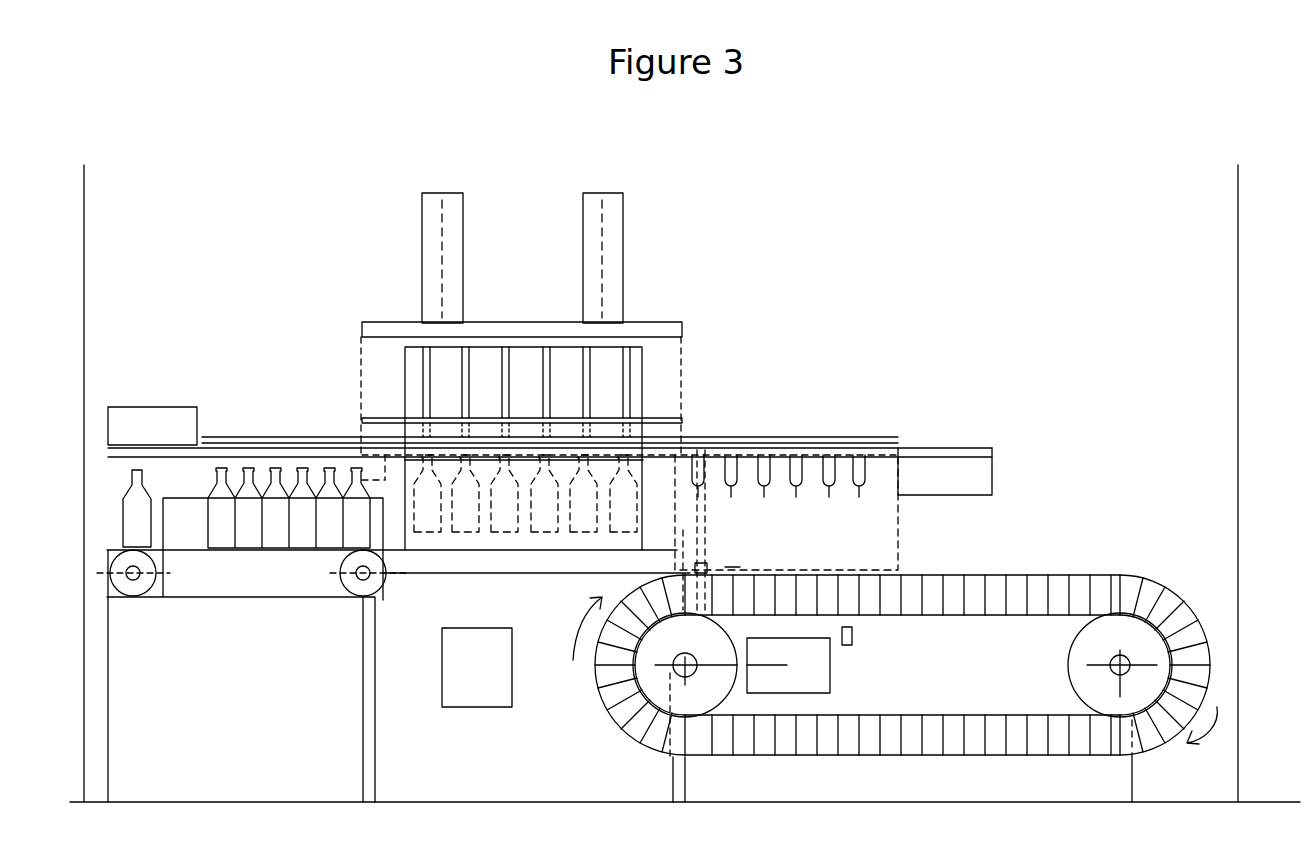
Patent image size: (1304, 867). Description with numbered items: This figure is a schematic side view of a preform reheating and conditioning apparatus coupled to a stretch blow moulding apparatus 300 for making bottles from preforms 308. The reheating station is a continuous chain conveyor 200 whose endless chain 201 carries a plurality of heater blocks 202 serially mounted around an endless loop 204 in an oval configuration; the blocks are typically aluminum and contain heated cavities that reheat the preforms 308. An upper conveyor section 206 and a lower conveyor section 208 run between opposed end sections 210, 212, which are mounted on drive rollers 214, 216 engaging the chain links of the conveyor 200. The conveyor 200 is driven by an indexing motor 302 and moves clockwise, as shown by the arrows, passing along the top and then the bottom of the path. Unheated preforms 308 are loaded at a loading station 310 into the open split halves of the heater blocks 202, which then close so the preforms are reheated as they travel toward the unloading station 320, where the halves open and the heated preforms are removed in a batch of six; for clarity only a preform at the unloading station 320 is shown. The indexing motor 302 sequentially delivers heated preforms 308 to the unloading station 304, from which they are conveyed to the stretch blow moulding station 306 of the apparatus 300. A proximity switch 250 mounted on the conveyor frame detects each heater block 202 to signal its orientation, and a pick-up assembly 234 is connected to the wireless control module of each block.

The continuous chain conveyor 200 is at (1097, 566).
The endless chain 201 is at (927, 608).
The heater block 202 is at (1040, 747).
The endless loop 204 is at (1018, 620).
The upper conveyor section 206 is at (952, 593).
The lower conveyor section 208 is at (925, 750).
The end section 210 is at (593, 683).
The end section 212 is at (1197, 678).
The drive roller 214 is at (665, 692).
The drive roller 216 is at (1138, 652).
The pick-up assembly 234 is at (480, 647).
The proximity switch 250 is at (852, 636).
The stretch blow moulding apparatus 300 is at (889, 414).
The indexing motor 302 is at (823, 672).
The unloading station 304 is at (903, 528).
The stretch blow moulding station 306 is at (709, 400).
The preform 308 is at (705, 563).
The loading station 310 is at (725, 567).
The unloading station 320 is at (707, 565).